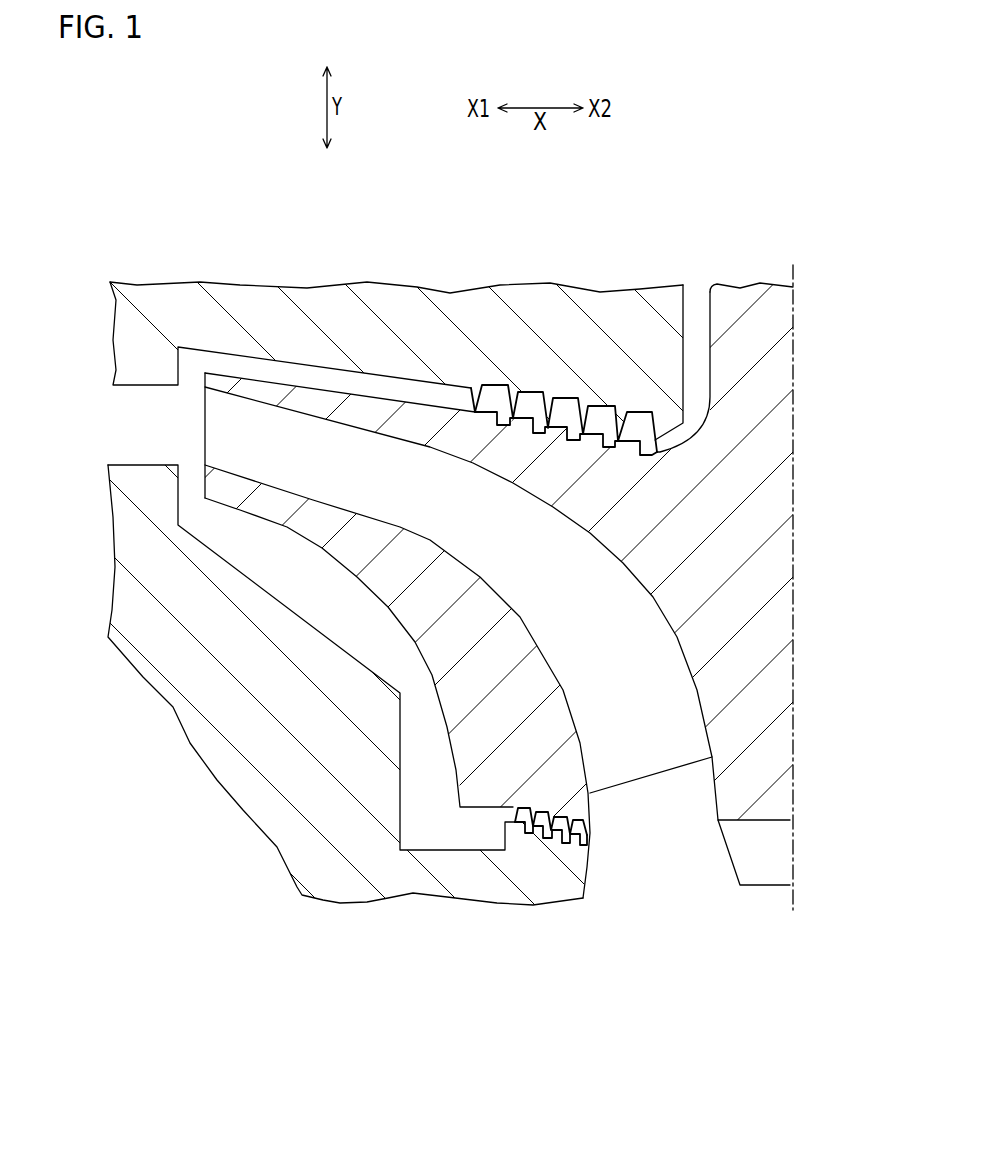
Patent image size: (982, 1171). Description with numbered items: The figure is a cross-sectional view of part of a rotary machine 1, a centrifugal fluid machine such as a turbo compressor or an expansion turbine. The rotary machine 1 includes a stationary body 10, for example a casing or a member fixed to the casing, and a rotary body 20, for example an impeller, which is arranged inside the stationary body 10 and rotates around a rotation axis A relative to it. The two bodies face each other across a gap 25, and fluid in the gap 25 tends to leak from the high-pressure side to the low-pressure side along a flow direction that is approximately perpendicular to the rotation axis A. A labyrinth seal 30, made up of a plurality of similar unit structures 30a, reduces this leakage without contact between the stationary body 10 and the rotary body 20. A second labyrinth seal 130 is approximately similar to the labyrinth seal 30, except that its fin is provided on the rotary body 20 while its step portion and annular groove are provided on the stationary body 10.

The rotary machine 1 is at (143, 190).
The stationary body 10 is at (243, 290).
The rotary body 20 is at (743, 287).
The gap 25 is at (526, 592).
The labyrinth seal 30 is at (454, 402).
The unit structure 30a is at (533, 397).
The labyrinth seal 130 is at (488, 819).
The rotation axis A is at (793, 265).